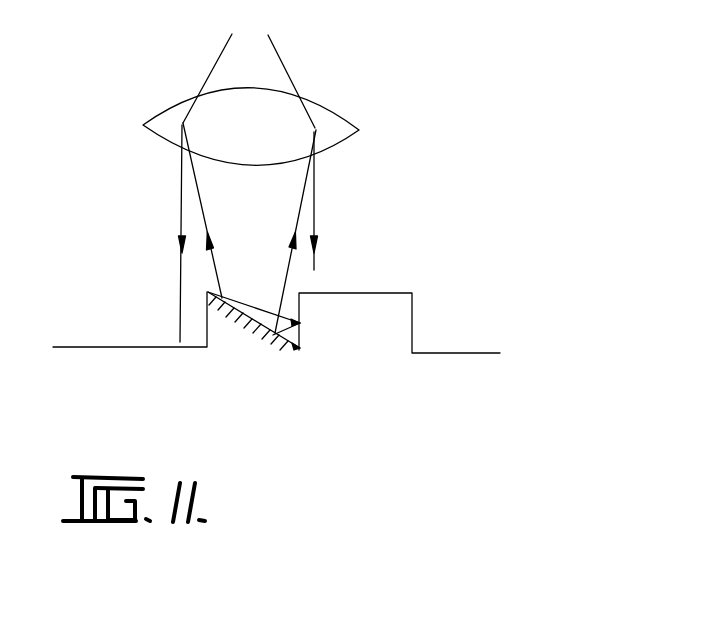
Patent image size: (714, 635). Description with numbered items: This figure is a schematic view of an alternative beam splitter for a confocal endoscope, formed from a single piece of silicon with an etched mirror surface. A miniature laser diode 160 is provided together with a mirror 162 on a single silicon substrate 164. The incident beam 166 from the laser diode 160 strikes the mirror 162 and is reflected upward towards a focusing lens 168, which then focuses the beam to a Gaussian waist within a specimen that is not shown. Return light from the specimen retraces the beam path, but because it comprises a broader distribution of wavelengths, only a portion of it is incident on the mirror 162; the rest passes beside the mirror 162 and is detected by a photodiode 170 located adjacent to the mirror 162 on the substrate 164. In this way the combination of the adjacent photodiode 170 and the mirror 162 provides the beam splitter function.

The miniature laser diode 160 is at (412, 293).
The mirror 162 is at (248, 358).
The silicon substrate 164 is at (320, 431).
The incident beam 166 is at (297, 214).
The focusing lens 168 is at (332, 141).
The photodiode 170 is at (200, 342).